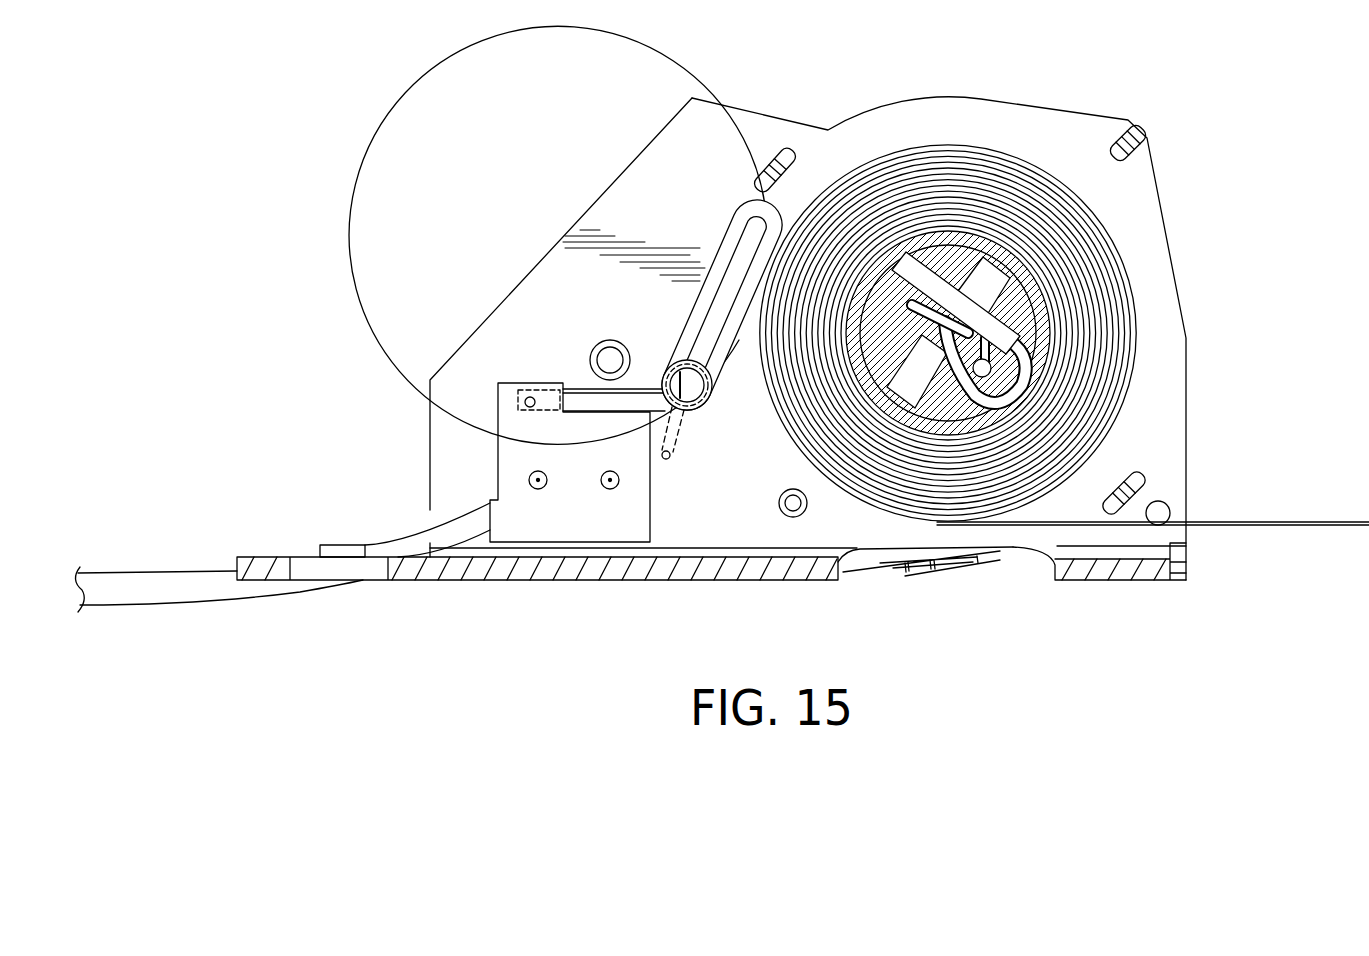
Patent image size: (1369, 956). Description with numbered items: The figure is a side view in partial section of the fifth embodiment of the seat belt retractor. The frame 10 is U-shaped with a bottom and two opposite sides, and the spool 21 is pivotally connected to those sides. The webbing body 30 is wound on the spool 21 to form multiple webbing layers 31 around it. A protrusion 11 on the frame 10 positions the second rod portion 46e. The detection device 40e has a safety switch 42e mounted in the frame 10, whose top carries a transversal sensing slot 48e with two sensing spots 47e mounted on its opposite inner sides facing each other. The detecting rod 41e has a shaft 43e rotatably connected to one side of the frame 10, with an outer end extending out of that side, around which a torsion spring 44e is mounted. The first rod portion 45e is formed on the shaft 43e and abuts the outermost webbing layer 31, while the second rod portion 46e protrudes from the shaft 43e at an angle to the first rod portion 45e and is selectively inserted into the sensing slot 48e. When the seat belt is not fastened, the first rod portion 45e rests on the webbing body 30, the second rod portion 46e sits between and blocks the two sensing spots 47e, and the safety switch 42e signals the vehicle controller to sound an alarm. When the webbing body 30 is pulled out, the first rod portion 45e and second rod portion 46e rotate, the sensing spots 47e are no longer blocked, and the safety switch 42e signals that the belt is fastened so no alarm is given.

The frame 10 is at (668, 152).
The protrusion 11 is at (603, 348).
The spool 21 is at (1045, 313).
The webbing body 30 is at (1043, 157).
The webbing layers 31 is at (1100, 218).
The detection device 40e is at (486, 381).
The detecting rod 41e is at (705, 424).
The safety switch 42e is at (567, 517).
The shaft 43e is at (678, 398).
The torsion spring 44e is at (680, 366).
The first rod portion 45e is at (733, 237).
The second rod portion 46e is at (583, 398).
The sensing spots 47e is at (525, 410).
The sensing slot 48e is at (512, 398).